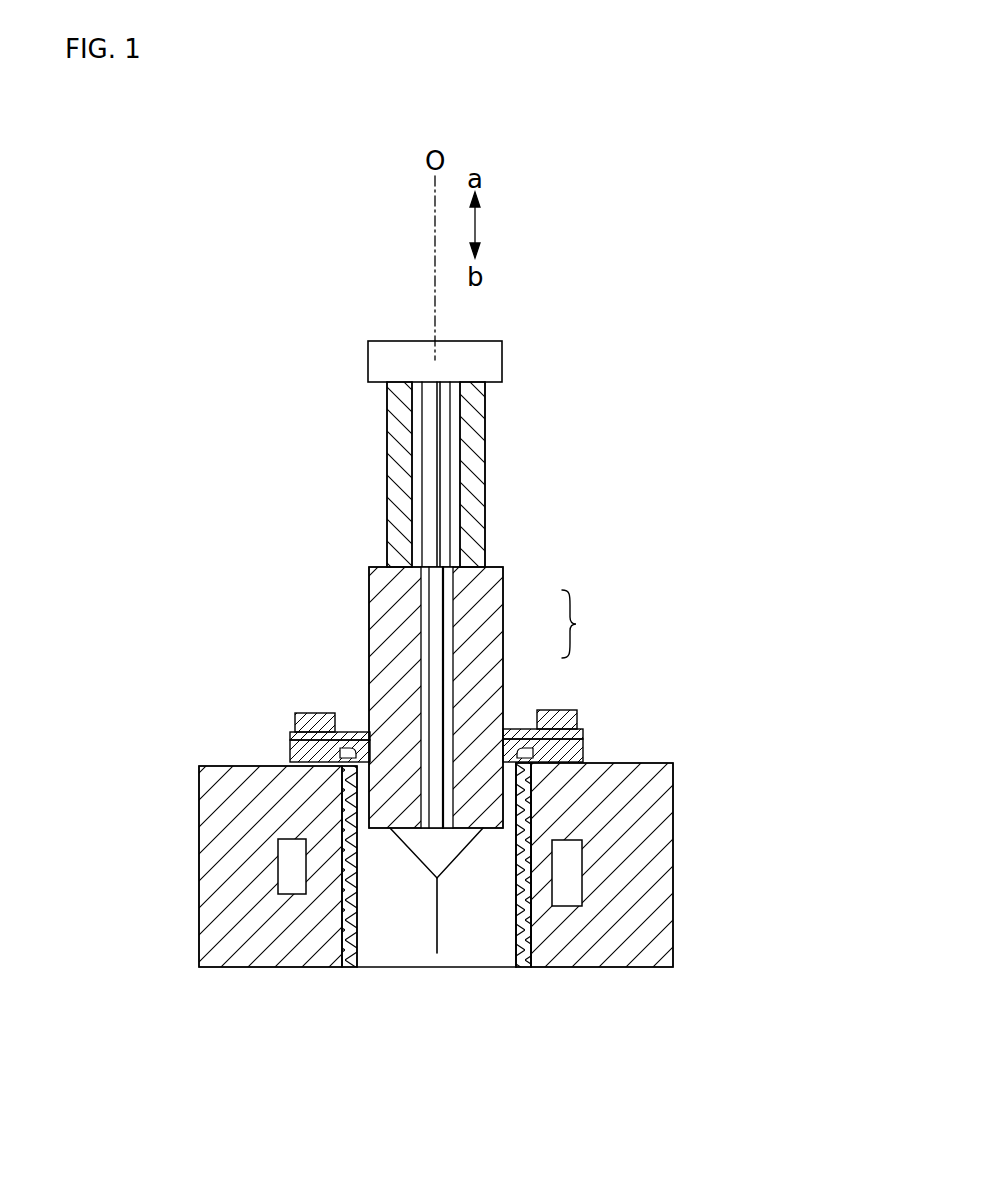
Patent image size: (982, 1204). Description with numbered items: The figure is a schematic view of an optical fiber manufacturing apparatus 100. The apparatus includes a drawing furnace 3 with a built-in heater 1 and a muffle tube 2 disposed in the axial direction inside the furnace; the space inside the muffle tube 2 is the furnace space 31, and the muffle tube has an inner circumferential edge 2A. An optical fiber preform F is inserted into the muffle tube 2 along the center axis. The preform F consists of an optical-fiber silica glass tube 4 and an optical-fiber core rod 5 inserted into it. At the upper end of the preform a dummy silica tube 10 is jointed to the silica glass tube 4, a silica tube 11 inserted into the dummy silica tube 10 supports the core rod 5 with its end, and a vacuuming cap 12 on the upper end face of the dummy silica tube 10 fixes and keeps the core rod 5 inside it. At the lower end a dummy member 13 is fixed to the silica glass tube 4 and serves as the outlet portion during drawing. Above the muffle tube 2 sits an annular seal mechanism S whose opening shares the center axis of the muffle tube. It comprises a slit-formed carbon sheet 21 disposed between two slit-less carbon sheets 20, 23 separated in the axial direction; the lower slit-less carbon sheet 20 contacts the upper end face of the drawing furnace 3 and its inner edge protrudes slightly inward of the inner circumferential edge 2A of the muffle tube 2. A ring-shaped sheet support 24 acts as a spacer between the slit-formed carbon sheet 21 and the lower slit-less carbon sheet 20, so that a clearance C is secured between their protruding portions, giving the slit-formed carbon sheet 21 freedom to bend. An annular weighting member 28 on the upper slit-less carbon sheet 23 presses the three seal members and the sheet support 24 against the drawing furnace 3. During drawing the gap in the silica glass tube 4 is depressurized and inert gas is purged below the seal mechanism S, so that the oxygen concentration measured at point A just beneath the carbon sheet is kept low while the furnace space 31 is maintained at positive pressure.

The optical fiber manufacturing apparatus 100 is at (286, 316).
The vacuuming cap 12 is at (503, 360).
The dummy silica tube 10 is at (473, 467).
The silica tube 11 is at (420, 515).
The optical-fiber silica glass tube 4 is at (485, 612).
The optical-fiber core rod 5 is at (445, 677).
The optical fiber preform F is at (578, 624).
The dummy member 13 is at (457, 858).
The drawing furnace 3 is at (220, 865).
The muffle tube 2 is at (528, 802).
The inner circumferential edge of the muffle tube 2A is at (512, 928).
The furnace space 31 is at (397, 935).
The heater 1 is at (293, 878).
The slit-less carbon sheet 23 is at (560, 728).
The weighting member 28 is at (577, 717).
The slit-formed carbon sheet 21 is at (583, 737).
The slit-less carbon sheet 20 is at (583, 760).
The sheet support 24 is at (290, 750).
The seal mechanism S is at (278, 733).
The clearance C is at (352, 742).
The point A is at (352, 771).